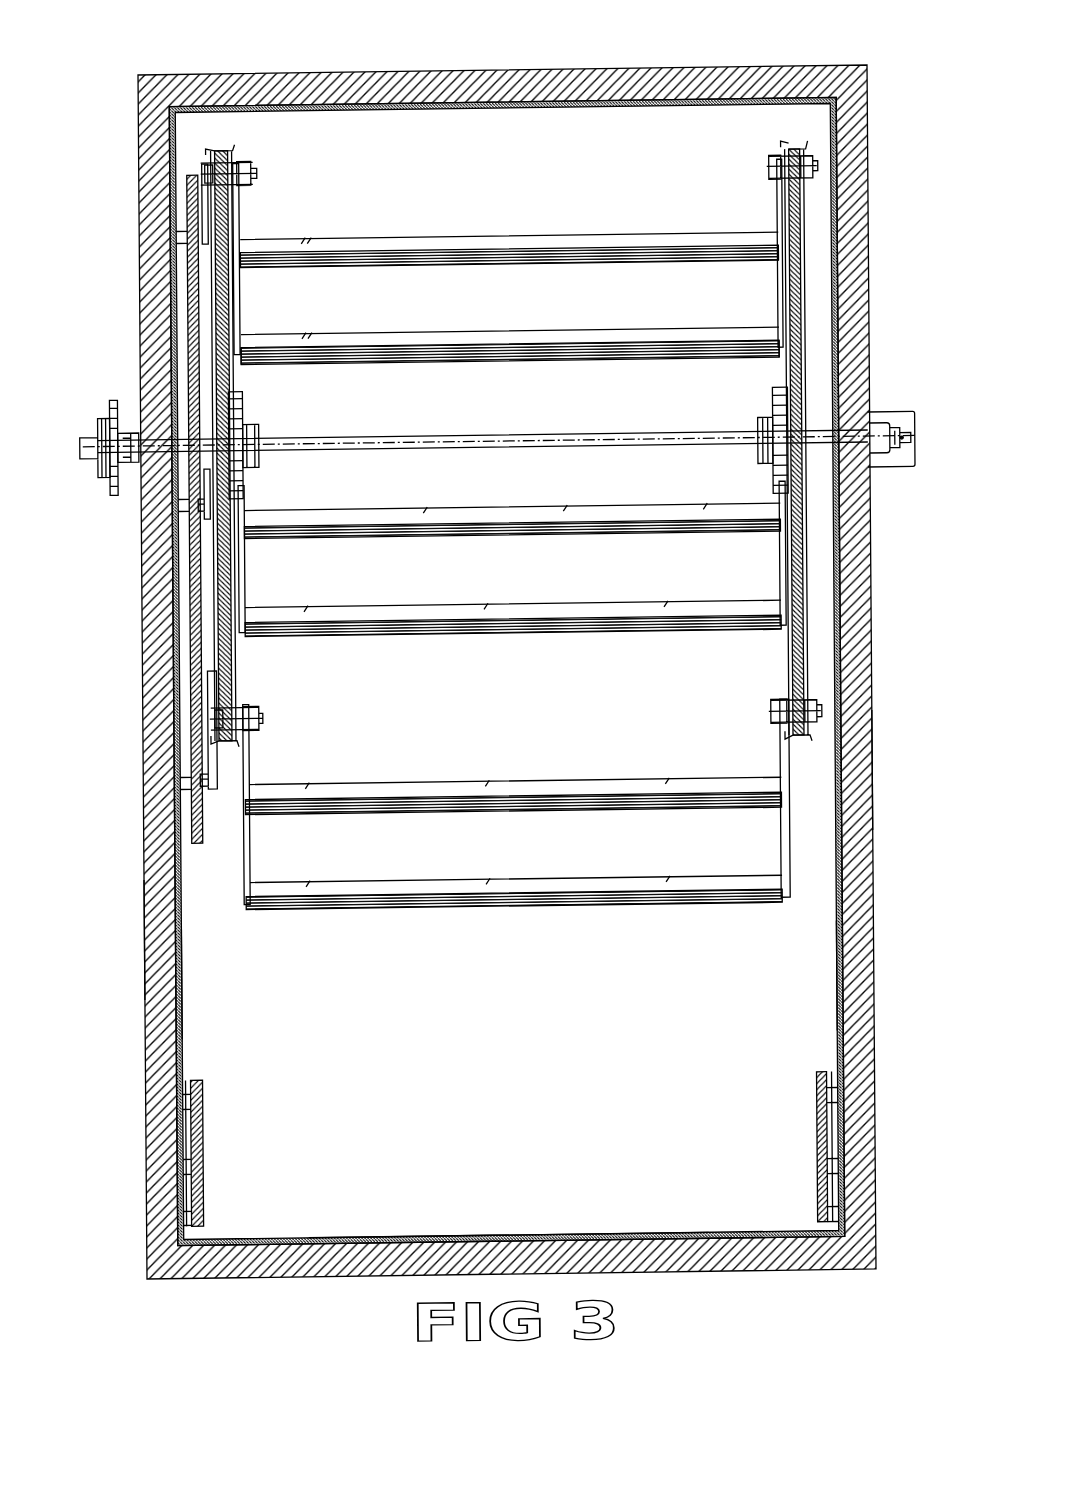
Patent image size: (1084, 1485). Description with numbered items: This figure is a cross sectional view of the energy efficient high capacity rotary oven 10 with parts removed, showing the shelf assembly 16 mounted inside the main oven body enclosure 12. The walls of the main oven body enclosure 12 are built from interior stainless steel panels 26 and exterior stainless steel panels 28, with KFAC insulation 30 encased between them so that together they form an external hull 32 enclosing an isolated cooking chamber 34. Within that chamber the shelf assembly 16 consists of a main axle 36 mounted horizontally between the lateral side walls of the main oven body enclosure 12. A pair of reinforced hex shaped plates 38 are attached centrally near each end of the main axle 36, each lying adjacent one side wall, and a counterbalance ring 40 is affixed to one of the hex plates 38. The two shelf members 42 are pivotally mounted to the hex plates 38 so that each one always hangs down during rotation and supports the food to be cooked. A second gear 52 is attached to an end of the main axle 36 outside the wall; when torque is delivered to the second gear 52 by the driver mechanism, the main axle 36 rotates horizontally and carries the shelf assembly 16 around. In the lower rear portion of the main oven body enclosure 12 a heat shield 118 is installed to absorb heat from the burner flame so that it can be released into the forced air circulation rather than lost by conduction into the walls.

The energy efficient high capacity rotary oven 10 is at (132, 90).
The main oven body enclosure 12 is at (136, 1061).
The shelf assembly 16 is at (462, 244).
The interior stainless steel panels 26 is at (178, 984).
The exterior stainless steel panels 28 is at (140, 942).
The KFAC insulation 30 is at (840, 986).
The external hull 32 is at (870, 778).
The isolated cooking chamber 34 is at (473, 989).
The main axle 36 is at (458, 440).
The reinforced hex shaped plates 38 is at (230, 661).
The counterbalance ring 40 is at (197, 845).
The two shelf members 42 is at (623, 242).
The second gear 52 is at (108, 398).
The heat shield 118 is at (197, 1141).